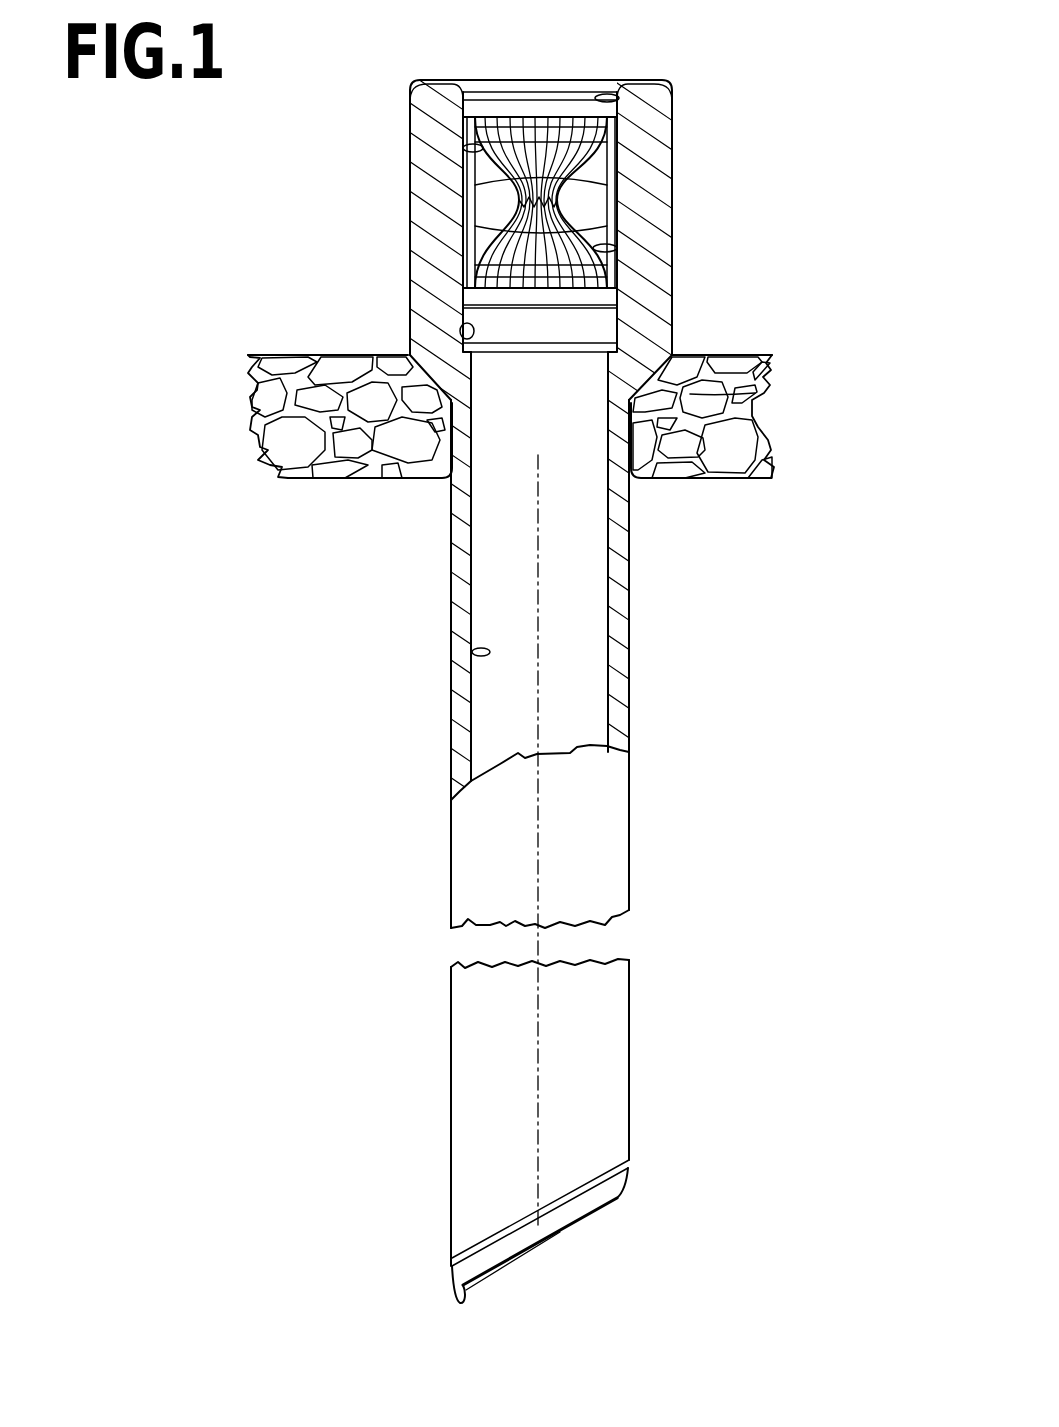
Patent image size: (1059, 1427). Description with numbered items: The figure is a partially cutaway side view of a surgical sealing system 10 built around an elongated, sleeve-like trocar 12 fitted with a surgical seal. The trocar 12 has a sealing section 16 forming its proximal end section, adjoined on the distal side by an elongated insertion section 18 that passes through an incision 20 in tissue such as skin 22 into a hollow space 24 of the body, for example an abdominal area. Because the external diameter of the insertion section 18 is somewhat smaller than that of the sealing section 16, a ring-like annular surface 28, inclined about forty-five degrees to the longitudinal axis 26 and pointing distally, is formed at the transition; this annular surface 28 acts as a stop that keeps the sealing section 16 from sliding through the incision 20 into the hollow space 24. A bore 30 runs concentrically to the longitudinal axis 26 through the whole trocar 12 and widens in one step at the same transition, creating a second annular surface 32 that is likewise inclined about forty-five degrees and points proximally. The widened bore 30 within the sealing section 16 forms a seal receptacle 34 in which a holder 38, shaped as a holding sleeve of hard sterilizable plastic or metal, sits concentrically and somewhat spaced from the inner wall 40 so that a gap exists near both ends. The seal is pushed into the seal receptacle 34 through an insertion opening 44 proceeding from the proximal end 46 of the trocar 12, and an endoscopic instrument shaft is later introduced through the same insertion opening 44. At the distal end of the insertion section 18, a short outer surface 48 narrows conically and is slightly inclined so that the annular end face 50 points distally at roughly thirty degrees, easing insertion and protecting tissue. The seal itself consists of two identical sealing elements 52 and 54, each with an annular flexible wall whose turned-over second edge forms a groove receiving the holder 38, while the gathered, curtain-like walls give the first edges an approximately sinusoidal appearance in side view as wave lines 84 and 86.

The surgical sealing system 10 is at (376, 83).
The trocar 12 is at (676, 767).
The sealing section 16 is at (396, 166).
The insertion section 18 is at (650, 563).
The incision 20 is at (470, 443).
The skin 22 is at (708, 355).
The hollow space 24 is at (408, 534).
The longitudinal axis 26 is at (540, 1057).
The annular surface 28 is at (755, 393).
The bore 30 is at (472, 652).
The second annular surface 32 is at (458, 329).
The seal receptacle 34 is at (618, 248).
The holder 38 is at (462, 234).
The inner wall 40 is at (463, 147).
The insertion opening 44 is at (625, 99).
The proximal end 46 is at (643, 82).
The outer surface 48 is at (620, 1185).
The annular end face 50 is at (456, 1303).
The sealing element 52 is at (470, 190).
The sealing element 54 is at (620, 213).
The wave line 84 is at (608, 186).
The wave line 86 is at (538, 202).